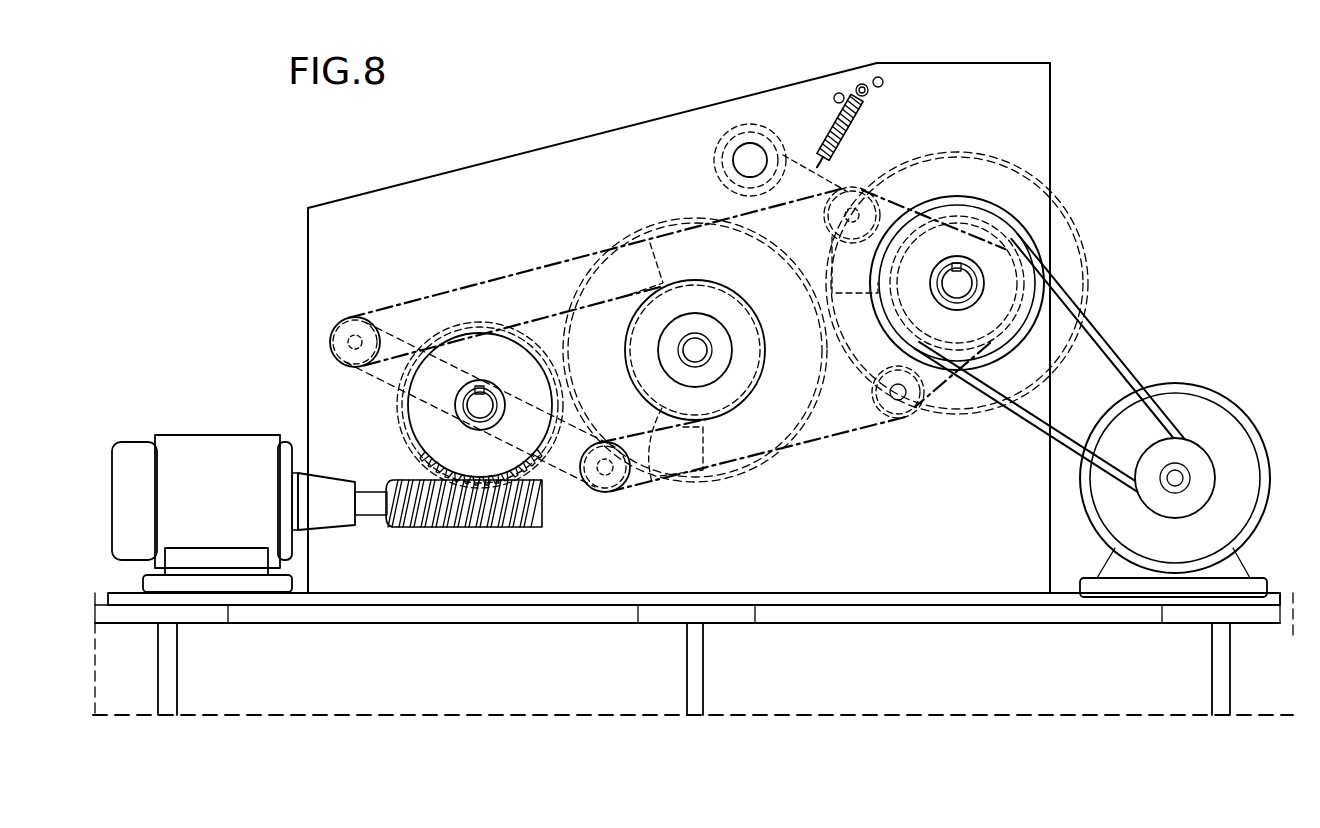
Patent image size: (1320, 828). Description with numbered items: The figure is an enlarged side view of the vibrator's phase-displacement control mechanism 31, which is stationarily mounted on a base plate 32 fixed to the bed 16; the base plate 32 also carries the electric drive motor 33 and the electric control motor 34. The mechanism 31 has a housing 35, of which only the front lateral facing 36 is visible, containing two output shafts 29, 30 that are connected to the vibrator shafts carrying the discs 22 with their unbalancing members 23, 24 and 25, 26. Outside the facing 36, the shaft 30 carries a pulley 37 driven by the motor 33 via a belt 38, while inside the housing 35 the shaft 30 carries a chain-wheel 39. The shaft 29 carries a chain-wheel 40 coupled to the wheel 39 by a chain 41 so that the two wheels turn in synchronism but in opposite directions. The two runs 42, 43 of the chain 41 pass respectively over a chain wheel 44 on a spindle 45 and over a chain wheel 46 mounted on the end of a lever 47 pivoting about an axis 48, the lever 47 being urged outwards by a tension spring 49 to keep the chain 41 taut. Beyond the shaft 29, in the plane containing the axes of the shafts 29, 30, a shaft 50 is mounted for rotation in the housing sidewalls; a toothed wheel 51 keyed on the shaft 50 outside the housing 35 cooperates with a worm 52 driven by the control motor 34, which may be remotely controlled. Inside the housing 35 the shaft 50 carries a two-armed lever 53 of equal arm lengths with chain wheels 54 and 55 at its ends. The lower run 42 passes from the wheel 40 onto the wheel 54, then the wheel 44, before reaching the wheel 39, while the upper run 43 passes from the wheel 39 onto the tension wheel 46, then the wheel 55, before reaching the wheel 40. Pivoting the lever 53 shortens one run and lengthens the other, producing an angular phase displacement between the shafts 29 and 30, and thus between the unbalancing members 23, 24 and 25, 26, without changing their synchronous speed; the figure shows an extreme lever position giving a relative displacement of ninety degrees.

The bed 16 is at (683, 675).
The discs 22 is at (680, 245).
The unbalancing member 23 is at (600, 276).
The unbalancing member 24 is at (629, 249).
The unbalancing member 25 is at (985, 172).
The unbalancing member 26 is at (939, 199).
The output shaft 29 is at (705, 360).
The output shaft 30 is at (962, 282).
The phase-displacement control mechanism 31 is at (679, 313).
The base plate 32 is at (882, 603).
The electric drive motor 33 is at (1215, 420).
The electric control motor 34 is at (212, 470).
The housing 35 is at (565, 140).
The front lateral facing 36 is at (481, 208).
The pulley 37 is at (1030, 305).
The belt 38 is at (1115, 350).
The chain-wheel 39 is at (963, 352).
The chain-wheel 40 is at (656, 440).
The chain 41 is at (822, 446).
The lower run 42 is at (667, 480).
The upper run 43 is at (515, 276).
The chain wheel 44 is at (892, 410).
The spindle 45 is at (905, 407).
The chain wheel 46 is at (832, 223).
The lever 47 is at (790, 150).
The axis 48 is at (750, 150).
The tension spring 49 is at (850, 120).
The shaft 50 is at (477, 400).
The toothed wheel 51 is at (448, 457).
The worm 52 is at (478, 512).
The two-armed lever 53 is at (405, 318).
The chain wheel 54 is at (605, 483).
The chain wheel 55 is at (340, 342).